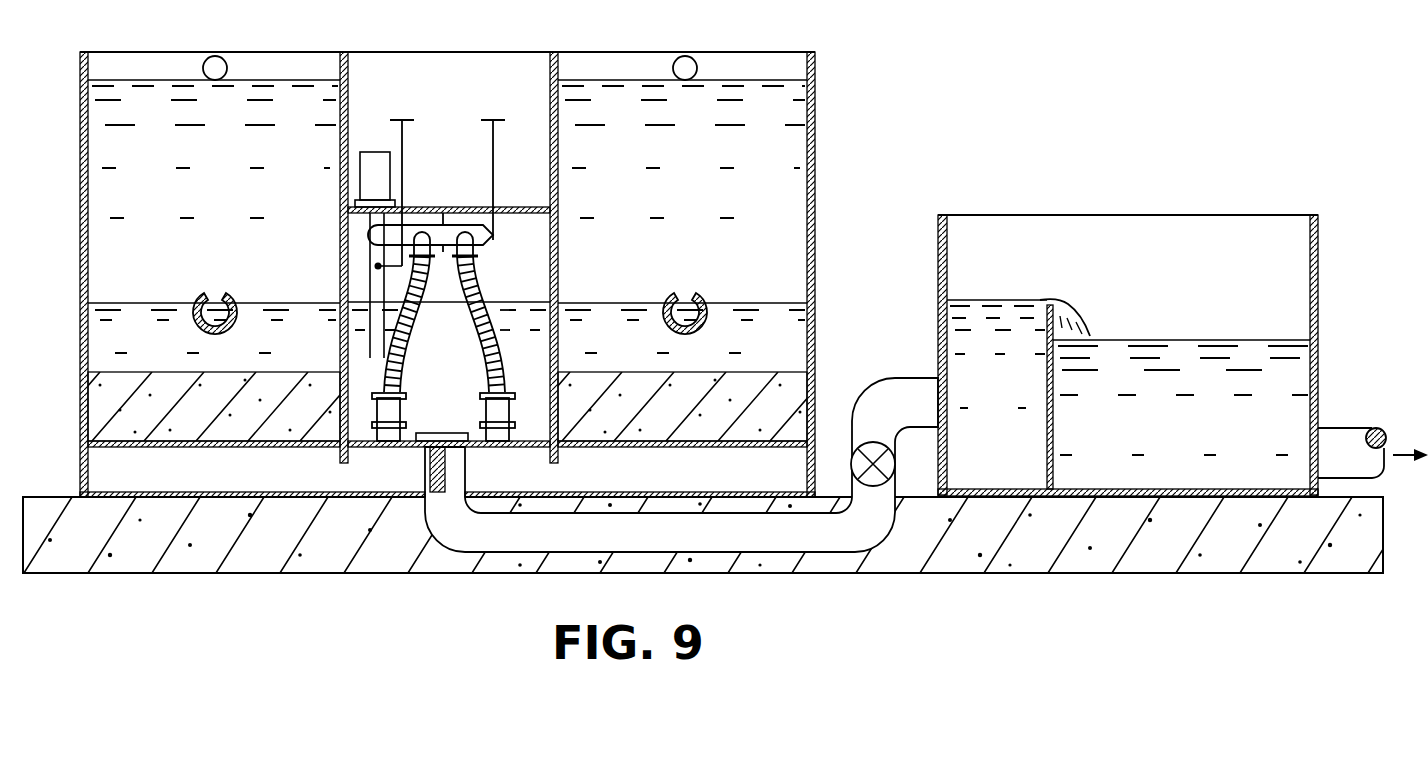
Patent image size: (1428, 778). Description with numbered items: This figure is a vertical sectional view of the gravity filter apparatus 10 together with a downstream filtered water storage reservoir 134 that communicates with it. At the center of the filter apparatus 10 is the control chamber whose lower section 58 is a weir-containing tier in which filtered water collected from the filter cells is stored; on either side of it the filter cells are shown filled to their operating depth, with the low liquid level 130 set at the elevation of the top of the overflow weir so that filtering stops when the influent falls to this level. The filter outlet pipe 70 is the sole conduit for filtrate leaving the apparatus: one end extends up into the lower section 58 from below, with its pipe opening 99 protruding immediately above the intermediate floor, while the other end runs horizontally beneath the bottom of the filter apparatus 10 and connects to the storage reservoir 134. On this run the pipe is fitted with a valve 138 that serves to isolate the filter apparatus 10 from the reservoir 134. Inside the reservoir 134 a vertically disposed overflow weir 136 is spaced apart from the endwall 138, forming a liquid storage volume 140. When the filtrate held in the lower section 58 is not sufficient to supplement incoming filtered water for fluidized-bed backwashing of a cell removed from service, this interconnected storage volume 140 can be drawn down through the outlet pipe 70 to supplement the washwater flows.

The gravity filter apparatus 10 is at (822, 110).
The lower section 58 is at (556, 246).
The filter outlet pipe 70 is at (545, 543).
The pipe opening 99 is at (455, 432).
The low liquid level 130 is at (634, 302).
The storage reservoir 134 is at (1220, 237).
The overflow weir 136 is at (1047, 377).
The valve 138 is at (940, 283).
The liquid storage volume 140 is at (1022, 451).